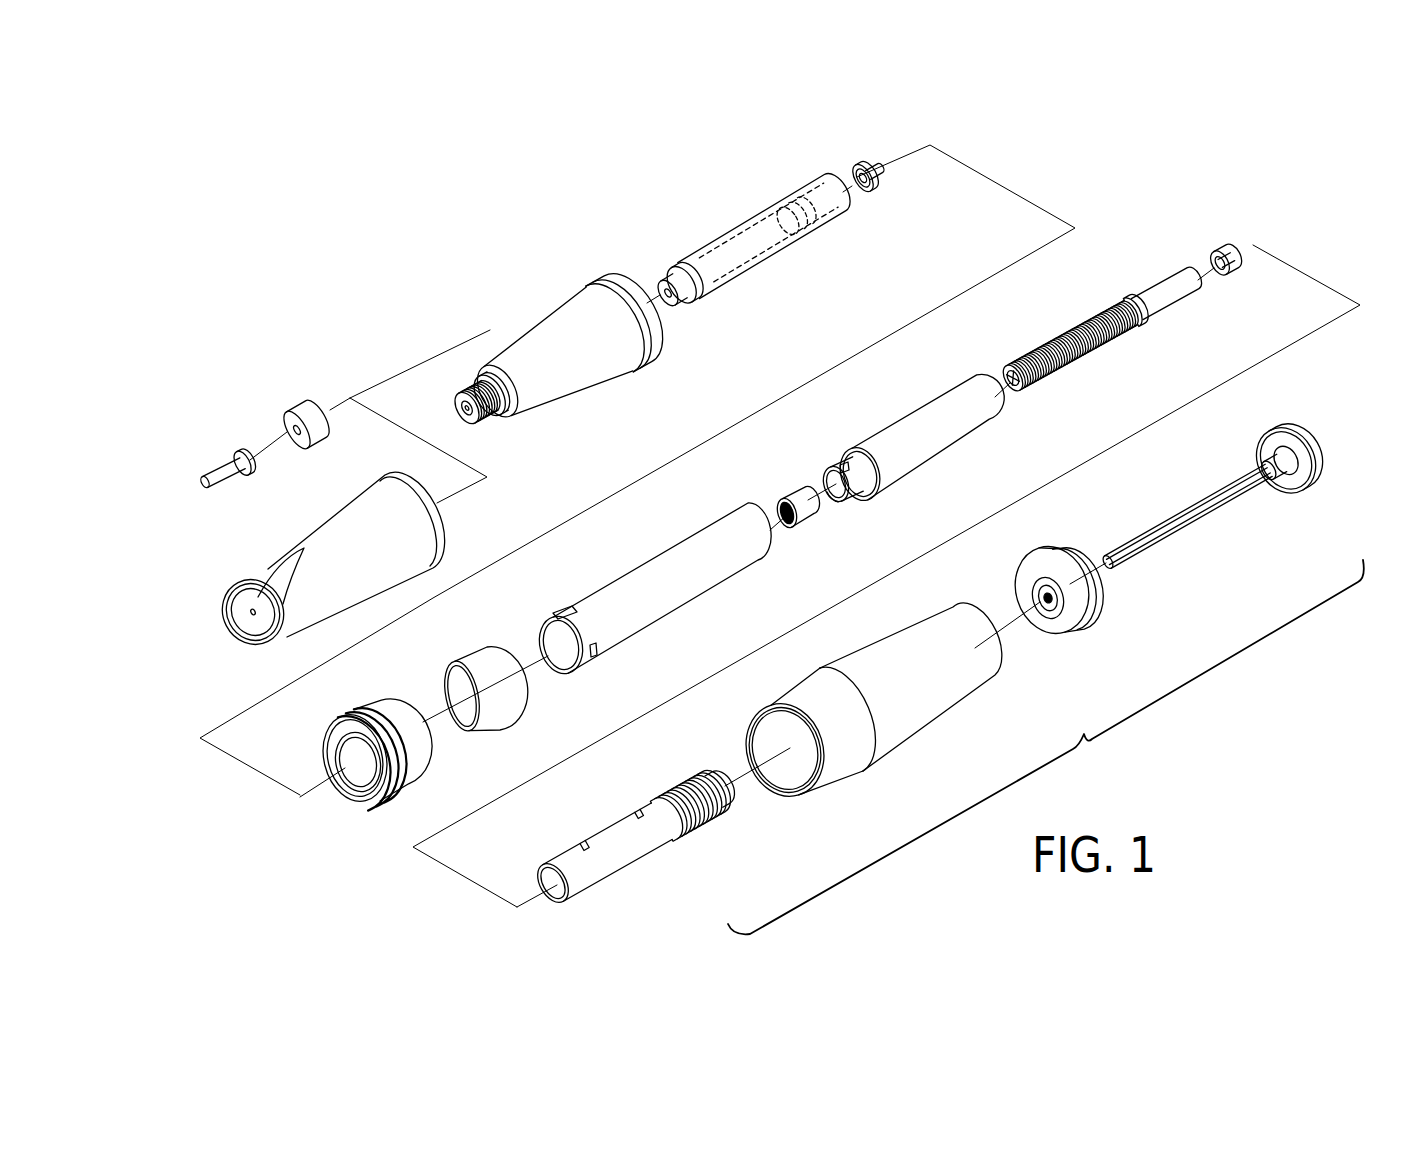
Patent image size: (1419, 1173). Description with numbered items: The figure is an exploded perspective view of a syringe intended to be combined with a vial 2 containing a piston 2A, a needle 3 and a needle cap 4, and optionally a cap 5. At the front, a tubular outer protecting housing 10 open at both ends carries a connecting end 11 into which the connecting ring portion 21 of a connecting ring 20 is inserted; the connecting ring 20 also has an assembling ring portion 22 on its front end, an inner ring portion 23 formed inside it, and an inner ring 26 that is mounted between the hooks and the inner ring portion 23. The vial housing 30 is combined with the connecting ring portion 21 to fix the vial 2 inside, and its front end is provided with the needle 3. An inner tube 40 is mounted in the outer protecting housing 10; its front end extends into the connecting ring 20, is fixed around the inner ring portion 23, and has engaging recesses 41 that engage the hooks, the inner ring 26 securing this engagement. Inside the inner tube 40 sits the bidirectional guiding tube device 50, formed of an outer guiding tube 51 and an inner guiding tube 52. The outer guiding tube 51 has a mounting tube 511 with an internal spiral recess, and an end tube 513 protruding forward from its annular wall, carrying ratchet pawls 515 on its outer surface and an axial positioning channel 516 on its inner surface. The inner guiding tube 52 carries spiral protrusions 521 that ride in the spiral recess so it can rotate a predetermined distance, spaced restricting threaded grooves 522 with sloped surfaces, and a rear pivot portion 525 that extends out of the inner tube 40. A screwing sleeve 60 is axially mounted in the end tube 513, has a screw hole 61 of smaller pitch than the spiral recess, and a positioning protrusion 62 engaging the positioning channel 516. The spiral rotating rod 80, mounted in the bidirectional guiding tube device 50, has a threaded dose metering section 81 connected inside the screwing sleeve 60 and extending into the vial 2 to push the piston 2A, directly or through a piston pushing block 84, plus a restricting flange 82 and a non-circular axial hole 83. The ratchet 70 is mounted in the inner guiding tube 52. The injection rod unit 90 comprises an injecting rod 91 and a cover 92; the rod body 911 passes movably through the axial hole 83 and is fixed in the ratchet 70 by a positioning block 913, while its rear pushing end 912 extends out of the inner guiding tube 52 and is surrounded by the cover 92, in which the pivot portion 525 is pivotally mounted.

The vial 2 is at (753, 234).
The piston 2A is at (787, 206).
The needle 3 is at (290, 390).
The needle cap 4 is at (213, 452).
The cap 5 is at (276, 532).
The outer protecting housing 10 is at (868, 725).
The connecting end 11 is at (894, 760).
The connecting ring 20 is at (370, 786).
The connecting ring portion 21 is at (319, 752).
The assembling ring portion 22 is at (354, 758).
The inner ring portion 23 is at (357, 762).
The inner ring 26 is at (516, 701).
The vial housing 30 is at (524, 318).
The inner tube 40 is at (652, 594).
The engaging recesses 41 is at (593, 650).
The bidirectional guiding tube device 50 is at (889, 442).
The outer guiding tube 51 is at (889, 442).
The mounting tube 511 is at (919, 439).
The end tube 513 is at (841, 481).
The ratchet pawls 515 is at (844, 467).
The positioning channel 516 is at (832, 497).
The inner guiding tube 52 is at (636, 821).
The spiral protrusions 521 is at (582, 846).
The restricting threaded grooves 522 is at (693, 803).
The pivot portion 525 is at (722, 786).
The screwing sleeve 60 is at (786, 516).
The screw hole 61 is at (797, 508).
The positioning protrusion 62 is at (779, 487).
The ratchet 70 is at (1213, 238).
The spiral rotating rod 80 is at (1102, 326).
The dose metering section 81 is at (1074, 344).
The restricting flange 82 is at (1107, 292).
The axial hole 83 is at (1013, 378).
The piston pushing block 84 is at (857, 166).
The injection rod unit 90 is at (1185, 540).
The injecting rod 91 is at (1224, 491).
The rod body 911 is at (1186, 517).
The pushing end 912 is at (1228, 515).
The positioning block 913 is at (1273, 468).
The cover 92 is at (1086, 642).